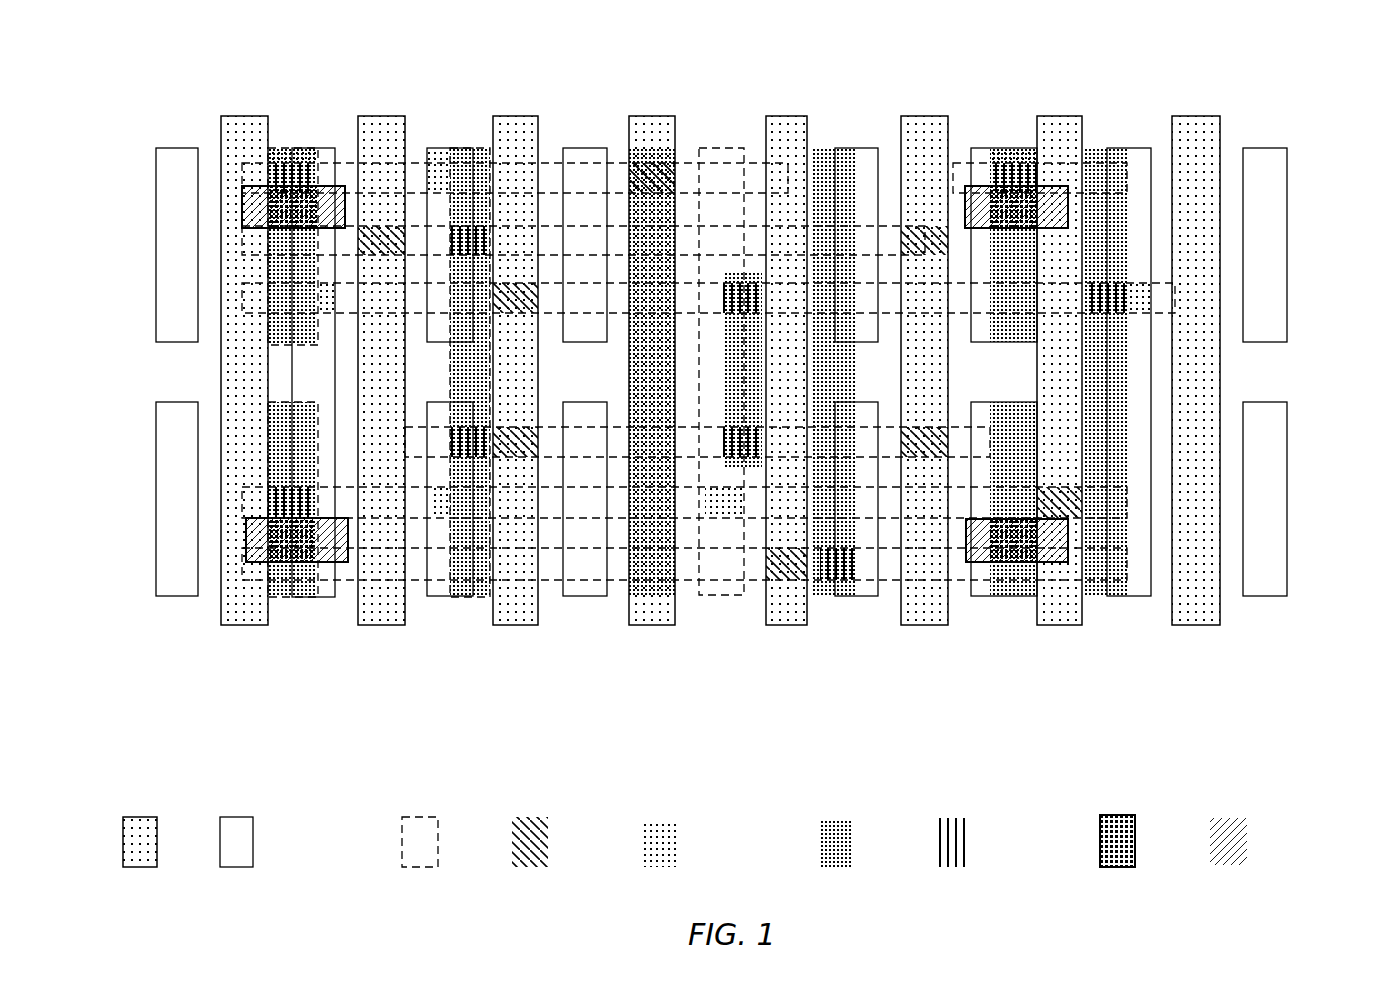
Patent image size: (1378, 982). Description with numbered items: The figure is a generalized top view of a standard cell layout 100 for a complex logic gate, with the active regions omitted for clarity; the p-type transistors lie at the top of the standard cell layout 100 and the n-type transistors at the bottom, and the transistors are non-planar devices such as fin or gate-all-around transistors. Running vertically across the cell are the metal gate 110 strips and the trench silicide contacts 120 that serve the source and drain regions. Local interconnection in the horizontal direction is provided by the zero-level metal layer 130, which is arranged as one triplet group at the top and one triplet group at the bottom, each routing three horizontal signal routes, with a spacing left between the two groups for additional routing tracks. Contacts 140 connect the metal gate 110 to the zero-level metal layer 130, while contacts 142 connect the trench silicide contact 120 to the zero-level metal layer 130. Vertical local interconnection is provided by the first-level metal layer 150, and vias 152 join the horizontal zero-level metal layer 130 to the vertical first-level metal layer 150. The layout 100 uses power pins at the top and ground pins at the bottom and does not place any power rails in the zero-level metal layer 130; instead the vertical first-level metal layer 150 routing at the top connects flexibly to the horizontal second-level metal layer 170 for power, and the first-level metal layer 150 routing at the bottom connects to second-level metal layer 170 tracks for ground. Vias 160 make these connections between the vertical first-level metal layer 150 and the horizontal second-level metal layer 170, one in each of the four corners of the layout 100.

The standard cell layout 100 is at (1259, 128).
The metal gate 110 is at (383, 116).
The trench silicide contact 120 is at (580, 148).
The metal 0 130 is at (750, 160).
The contact 140 is at (923, 233).
The contact 142 is at (442, 182).
The metal 1 150 is at (828, 168).
The via 152 is at (287, 165).
The via 160 is at (1020, 212).
The metal 2 170 is at (975, 207).